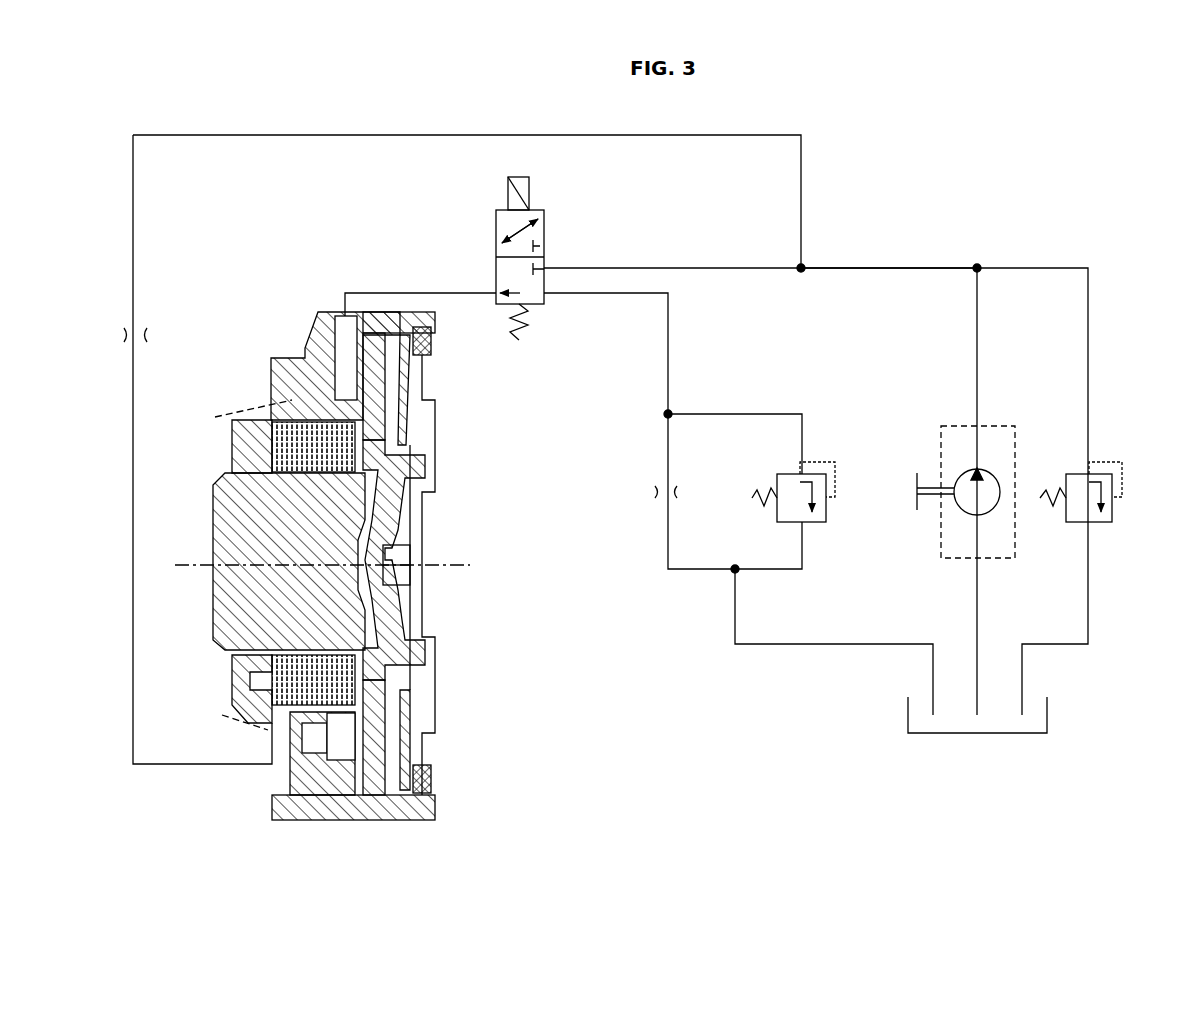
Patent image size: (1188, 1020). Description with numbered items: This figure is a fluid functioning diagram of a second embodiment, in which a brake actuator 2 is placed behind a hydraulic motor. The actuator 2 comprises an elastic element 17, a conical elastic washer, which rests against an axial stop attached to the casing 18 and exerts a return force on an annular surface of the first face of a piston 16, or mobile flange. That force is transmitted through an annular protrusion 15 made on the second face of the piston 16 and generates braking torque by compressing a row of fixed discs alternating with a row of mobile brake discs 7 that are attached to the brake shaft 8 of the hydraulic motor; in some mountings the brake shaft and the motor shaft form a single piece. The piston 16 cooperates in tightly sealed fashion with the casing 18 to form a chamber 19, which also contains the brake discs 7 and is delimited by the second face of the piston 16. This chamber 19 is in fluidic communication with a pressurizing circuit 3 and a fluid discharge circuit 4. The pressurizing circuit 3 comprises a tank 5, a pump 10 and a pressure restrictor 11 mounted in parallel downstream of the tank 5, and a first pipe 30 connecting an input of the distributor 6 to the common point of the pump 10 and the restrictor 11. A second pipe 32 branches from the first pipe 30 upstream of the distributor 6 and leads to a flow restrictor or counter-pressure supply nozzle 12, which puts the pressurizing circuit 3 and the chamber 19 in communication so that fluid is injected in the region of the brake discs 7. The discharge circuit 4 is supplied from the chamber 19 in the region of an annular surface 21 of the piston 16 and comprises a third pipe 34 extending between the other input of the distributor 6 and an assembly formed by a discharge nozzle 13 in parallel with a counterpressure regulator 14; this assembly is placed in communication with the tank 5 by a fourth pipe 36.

The actuator 2 is at (400, 686).
The pressurizing fluid circuit 3 is at (1082, 248).
The fluid discharge circuit 4 is at (704, 616).
The tank 5 is at (1048, 715).
The distributor 6 is at (548, 236).
The brake discs 7 is at (290, 688).
The brake shaft 8 is at (250, 531).
The pump 10 is at (998, 470).
The pressure restrictor 11 is at (1126, 478).
The counter-pressure supply nozzle 12 is at (150, 345).
The discharge nozzle 13 is at (655, 492).
The counterpressure regulator 14 is at (840, 478).
The annular protrusion 15 is at (366, 680).
The piston 16 is at (402, 506).
The elastic element 17 is at (412, 378).
The casing 18 is at (285, 382).
The chamber 19 is at (340, 358).
The annular surface 21 is at (386, 386).
The first pipe 30 is at (886, 268).
The second pipe 32 is at (476, 135).
The third pipe 34 is at (602, 293).
The fourth pipe 36 is at (848, 644).